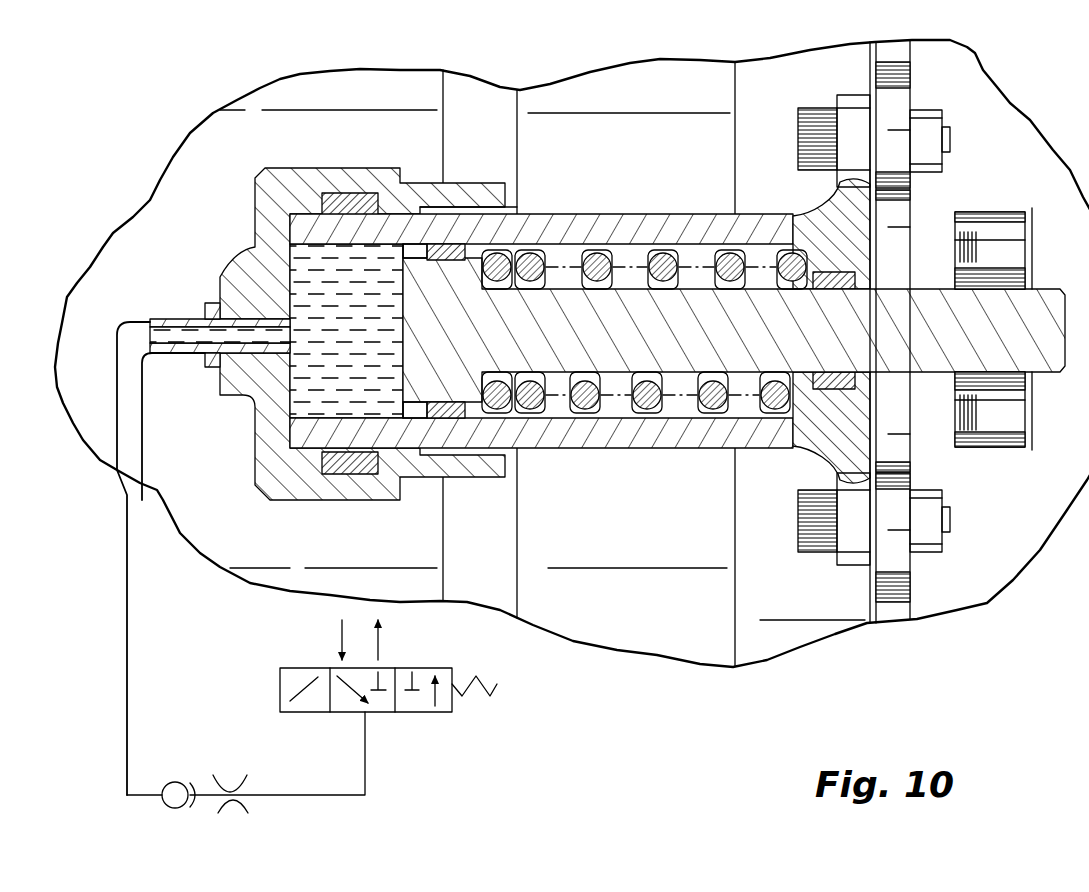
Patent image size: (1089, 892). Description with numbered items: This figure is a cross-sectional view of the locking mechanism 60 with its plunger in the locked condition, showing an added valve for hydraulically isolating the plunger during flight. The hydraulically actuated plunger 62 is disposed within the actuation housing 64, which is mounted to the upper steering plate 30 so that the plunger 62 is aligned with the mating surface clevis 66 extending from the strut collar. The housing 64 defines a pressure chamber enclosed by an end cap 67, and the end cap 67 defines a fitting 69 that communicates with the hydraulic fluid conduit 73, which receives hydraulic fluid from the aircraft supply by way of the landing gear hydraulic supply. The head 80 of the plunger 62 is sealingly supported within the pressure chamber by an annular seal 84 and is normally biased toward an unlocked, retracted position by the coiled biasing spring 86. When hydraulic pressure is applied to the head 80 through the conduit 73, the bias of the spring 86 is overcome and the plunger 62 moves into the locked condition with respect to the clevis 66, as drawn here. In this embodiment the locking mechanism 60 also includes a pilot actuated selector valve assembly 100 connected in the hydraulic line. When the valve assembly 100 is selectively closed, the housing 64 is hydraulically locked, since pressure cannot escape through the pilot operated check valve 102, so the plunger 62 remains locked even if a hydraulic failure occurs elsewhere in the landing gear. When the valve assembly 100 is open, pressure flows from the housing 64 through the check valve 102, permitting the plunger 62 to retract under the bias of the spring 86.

The locking mechanism 60 is at (652, 170).
The upper steering plate 30 is at (907, 70).
The mating surface clevis 66 is at (1003, 222).
The end cap 67 is at (300, 170).
The annular seal 84 is at (458, 243).
The coiled biasing spring 86 is at (592, 255).
The fitting 69 is at (212, 303).
The hydraulic fluid conduit 73 is at (131, 416).
The head 80 is at (433, 418).
The actuation housing 64 is at (552, 440).
The hydraulically actuated plunger 62 is at (683, 365).
The pilot actuated selector valve assembly 100 is at (413, 743).
The pilot operated check valve 102 is at (175, 808).